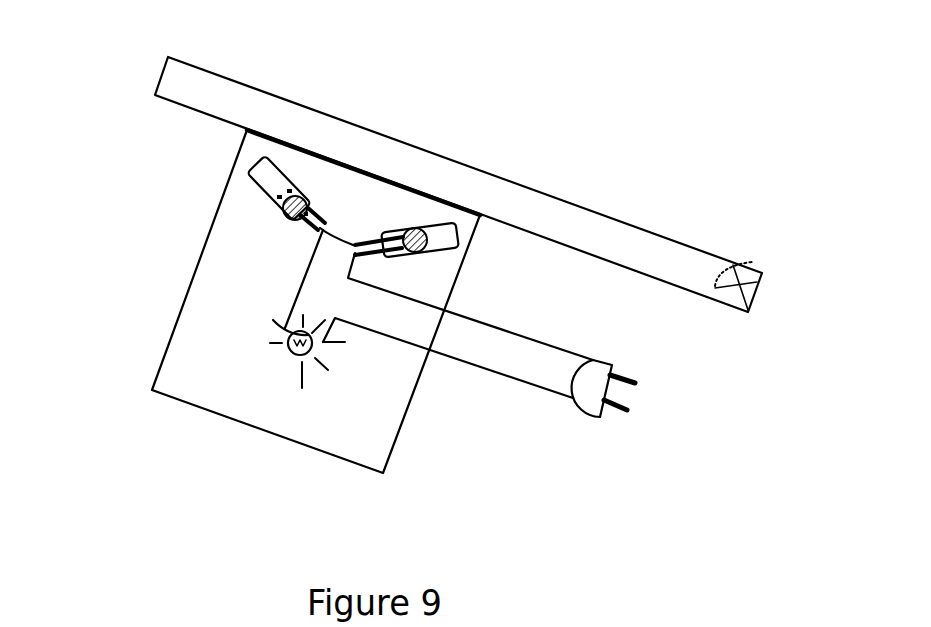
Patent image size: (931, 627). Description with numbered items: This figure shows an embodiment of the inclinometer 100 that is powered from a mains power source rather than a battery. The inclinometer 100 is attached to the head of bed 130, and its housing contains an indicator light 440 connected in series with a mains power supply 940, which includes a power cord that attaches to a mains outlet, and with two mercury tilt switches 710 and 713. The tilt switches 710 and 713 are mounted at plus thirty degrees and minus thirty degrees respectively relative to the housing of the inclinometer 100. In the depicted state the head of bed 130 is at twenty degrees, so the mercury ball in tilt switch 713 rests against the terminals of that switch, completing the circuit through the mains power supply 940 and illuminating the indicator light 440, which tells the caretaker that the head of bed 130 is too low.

The inclinometer 100 is at (215, 332).
The head of bed 130 is at (588, 213).
The indicator light 440 is at (288, 358).
The mercury tilt switch 710 is at (287, 177).
The mercury tilt switch 713 is at (430, 233).
The mains power supply 940 is at (645, 387).